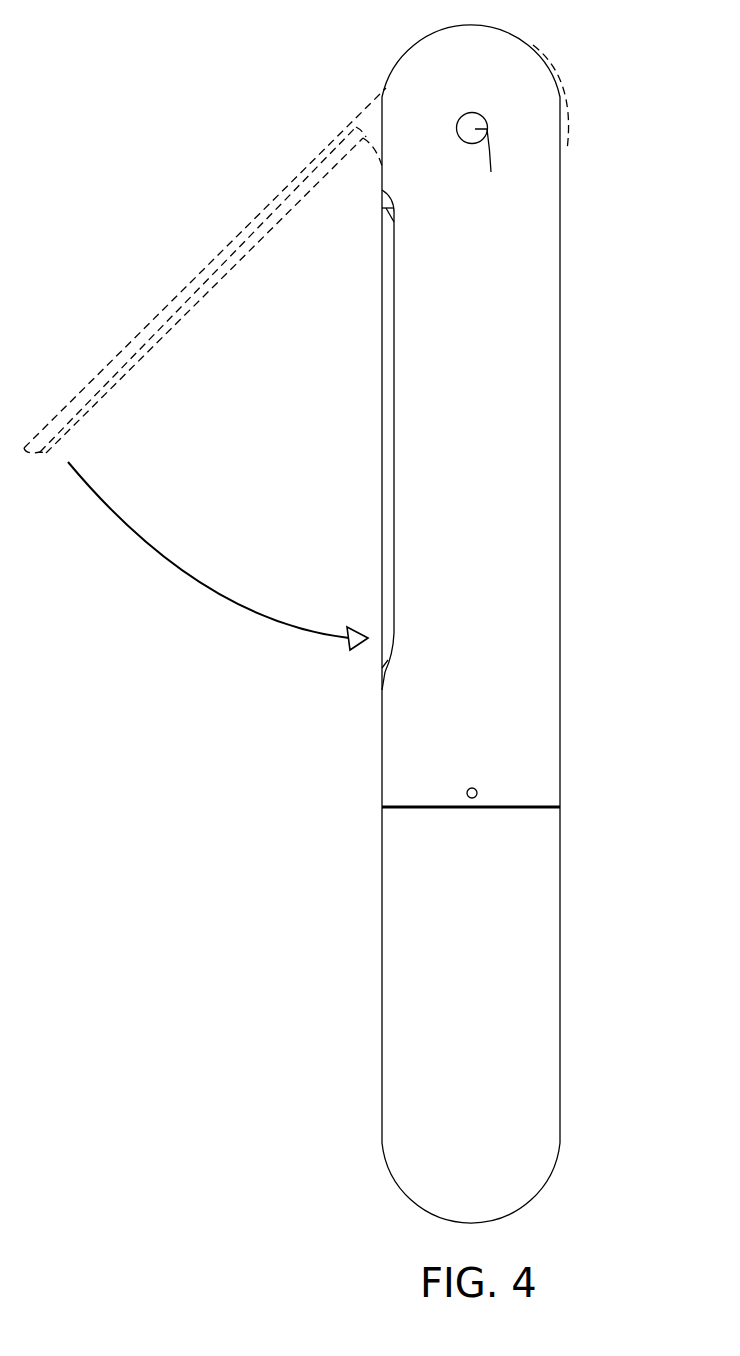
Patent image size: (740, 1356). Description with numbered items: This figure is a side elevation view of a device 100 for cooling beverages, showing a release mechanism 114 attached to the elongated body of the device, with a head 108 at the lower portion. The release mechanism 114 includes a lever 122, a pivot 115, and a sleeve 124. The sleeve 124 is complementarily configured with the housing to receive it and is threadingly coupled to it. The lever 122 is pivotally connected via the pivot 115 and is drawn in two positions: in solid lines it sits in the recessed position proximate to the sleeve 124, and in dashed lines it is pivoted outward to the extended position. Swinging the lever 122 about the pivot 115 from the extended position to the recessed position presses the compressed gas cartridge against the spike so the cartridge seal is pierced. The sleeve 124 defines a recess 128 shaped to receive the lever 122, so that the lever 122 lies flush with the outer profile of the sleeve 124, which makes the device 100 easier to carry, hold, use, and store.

The device 100 is at (630, 81).
The head 108 is at (542, 901).
The release mechanism 114 is at (350, 278).
The pivot 115 is at (486, 156).
The lever 122 is at (383, 356).
The sleeve 124 is at (530, 251).
The recess 128 is at (382, 691).